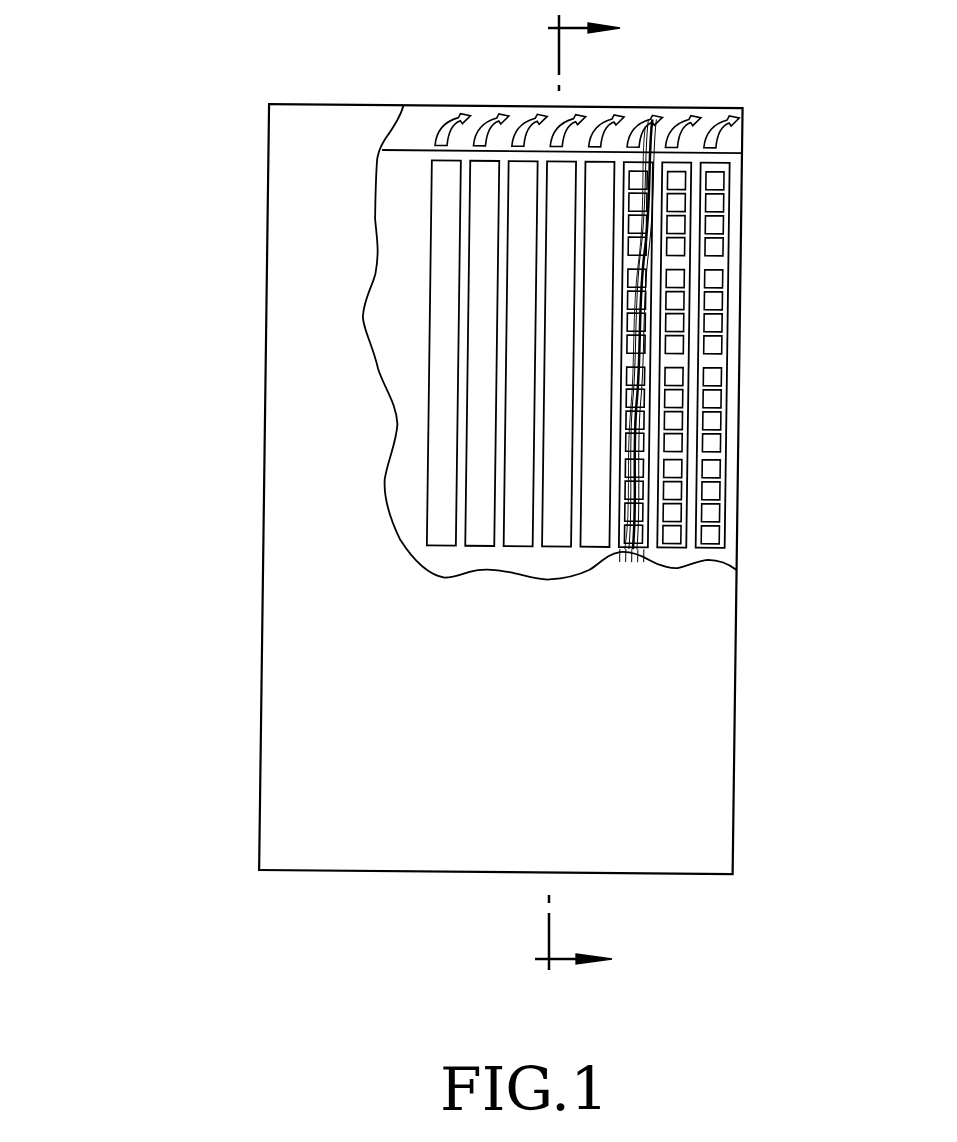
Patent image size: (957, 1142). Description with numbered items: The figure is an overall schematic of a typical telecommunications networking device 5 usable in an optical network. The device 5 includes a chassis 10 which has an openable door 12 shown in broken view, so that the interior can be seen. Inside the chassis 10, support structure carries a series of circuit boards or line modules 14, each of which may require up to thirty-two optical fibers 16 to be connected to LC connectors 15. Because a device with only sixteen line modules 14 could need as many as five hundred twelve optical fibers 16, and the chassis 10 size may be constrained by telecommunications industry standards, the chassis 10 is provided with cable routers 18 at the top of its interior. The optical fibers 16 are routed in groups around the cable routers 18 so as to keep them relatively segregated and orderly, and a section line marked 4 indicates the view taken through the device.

The telecommunications networking device 5 is at (118, 290).
The chassis 10 is at (266, 205).
The openable door 12 is at (305, 132).
The line module 14 is at (717, 263).
The LC connector 15 is at (718, 178).
The optical fiber 16 is at (651, 118).
The cable router 18 is at (716, 126).
The section line 4 is at (577, 485).